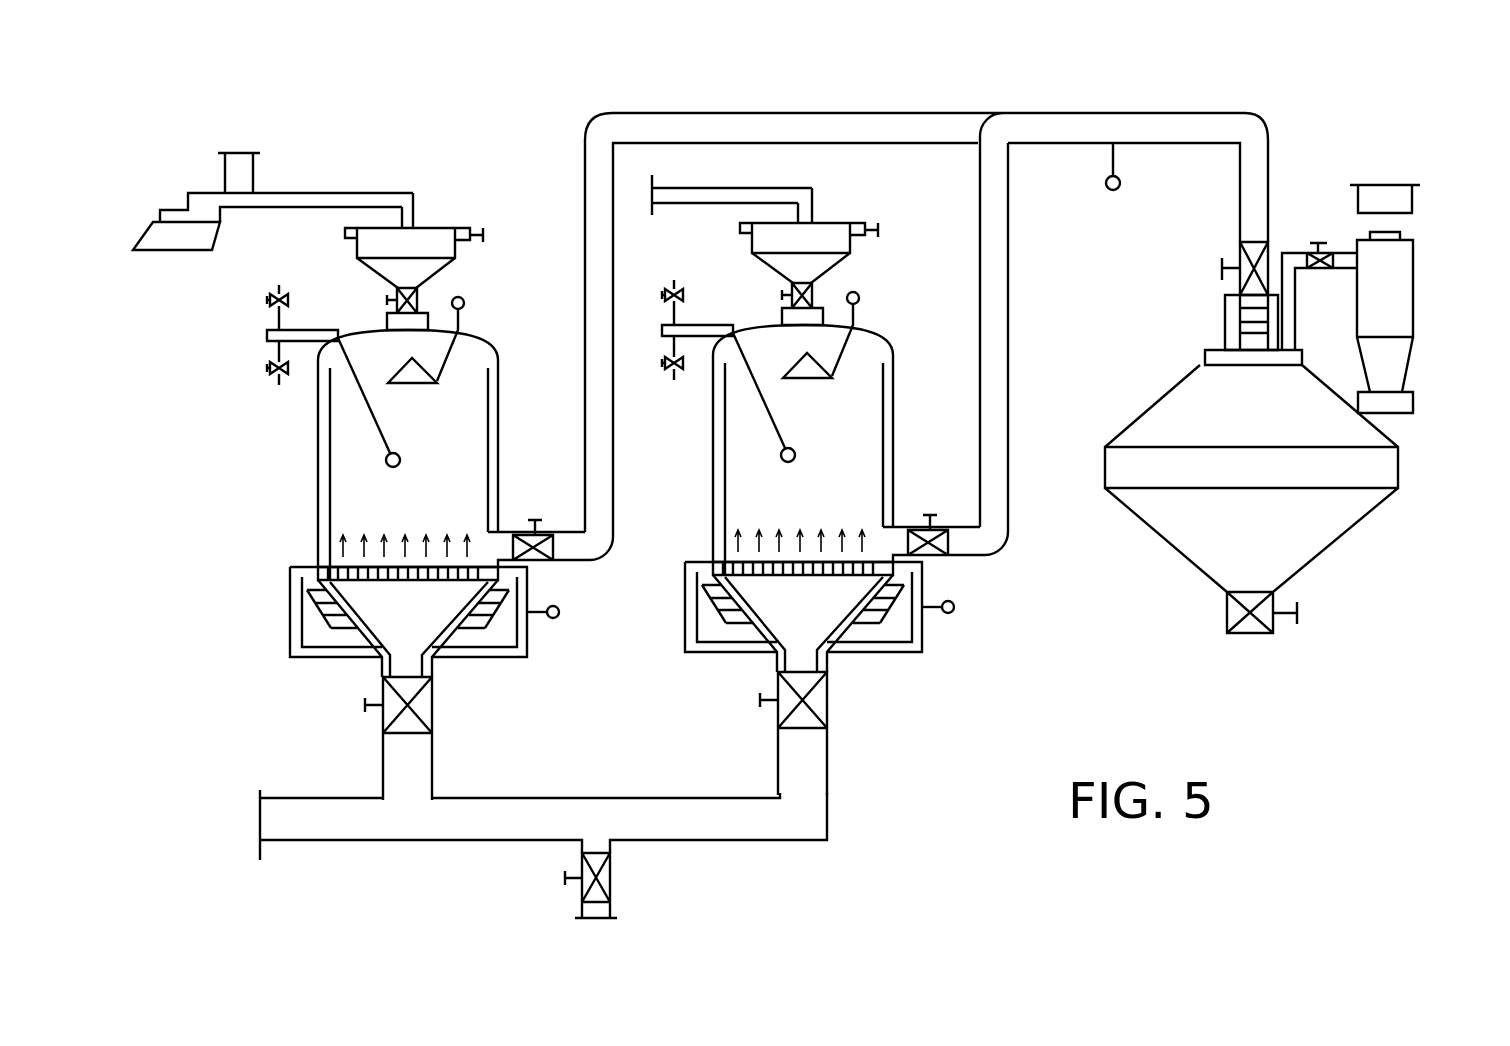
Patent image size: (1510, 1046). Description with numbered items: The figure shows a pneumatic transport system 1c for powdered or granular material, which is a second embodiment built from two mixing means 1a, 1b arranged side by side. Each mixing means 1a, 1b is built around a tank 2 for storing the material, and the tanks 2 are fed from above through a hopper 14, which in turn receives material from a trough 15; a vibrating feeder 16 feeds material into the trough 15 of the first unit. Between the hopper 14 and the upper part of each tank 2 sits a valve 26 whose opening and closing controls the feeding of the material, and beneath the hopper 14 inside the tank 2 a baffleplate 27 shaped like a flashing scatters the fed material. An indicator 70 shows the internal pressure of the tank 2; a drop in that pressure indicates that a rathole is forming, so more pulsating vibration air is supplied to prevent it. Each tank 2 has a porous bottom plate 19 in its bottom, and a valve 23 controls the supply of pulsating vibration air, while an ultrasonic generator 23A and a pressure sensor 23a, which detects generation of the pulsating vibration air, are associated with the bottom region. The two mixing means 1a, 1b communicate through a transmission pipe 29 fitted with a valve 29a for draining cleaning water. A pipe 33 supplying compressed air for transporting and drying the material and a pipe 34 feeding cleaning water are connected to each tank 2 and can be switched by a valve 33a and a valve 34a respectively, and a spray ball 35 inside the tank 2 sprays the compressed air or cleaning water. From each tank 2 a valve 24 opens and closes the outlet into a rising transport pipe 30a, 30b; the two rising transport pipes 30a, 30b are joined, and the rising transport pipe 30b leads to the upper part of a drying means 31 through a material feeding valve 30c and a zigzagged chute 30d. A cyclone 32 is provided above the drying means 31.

The mixing means 1a is at (507, 407).
The mixing means 1b is at (905, 405).
The pneumatic transport system 1c is at (918, 100).
The tank 2 is at (500, 442).
The hopper 14 is at (448, 266).
The trough 15 is at (297, 193).
The vibrating feeder 16 is at (153, 235).
The porous bottom plate 19 is at (427, 583).
The valve 23 is at (433, 702).
The ultrasonic generator 23A is at (330, 622).
The pressure sensor 23a is at (556, 618).
The valve 24 is at (542, 530).
The valve 26 is at (418, 300).
The baffleplate 27 is at (410, 363).
The transmission pipe 29 is at (635, 797).
The valve 29a is at (612, 880).
The rising transport pipe 30a is at (615, 242).
The rising transport pipe 30b is at (1010, 247).
The material feeding valve 30c is at (1238, 288).
The zigzagged chute 30d is at (1255, 330).
The drying means 31 is at (1103, 467).
The cyclone 32 is at (1398, 305).
The pipe 33 is at (282, 323).
The valve 33a is at (284, 297).
The pipe 34 is at (277, 347).
The valve 34a is at (277, 385).
The spray ball 35 is at (398, 465).
The indicator 70 is at (465, 303).